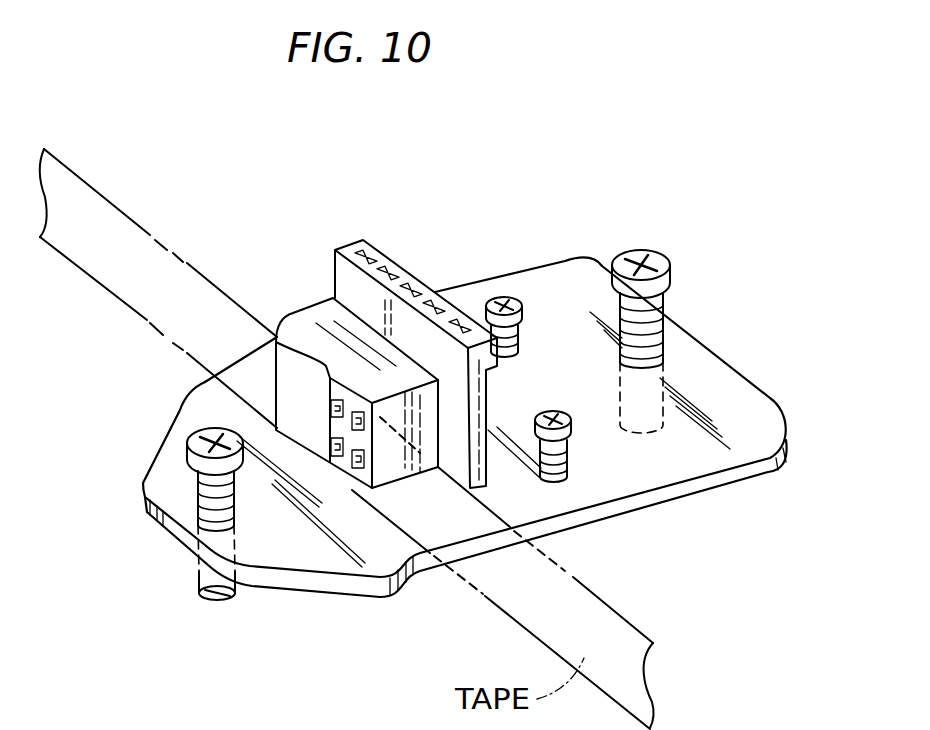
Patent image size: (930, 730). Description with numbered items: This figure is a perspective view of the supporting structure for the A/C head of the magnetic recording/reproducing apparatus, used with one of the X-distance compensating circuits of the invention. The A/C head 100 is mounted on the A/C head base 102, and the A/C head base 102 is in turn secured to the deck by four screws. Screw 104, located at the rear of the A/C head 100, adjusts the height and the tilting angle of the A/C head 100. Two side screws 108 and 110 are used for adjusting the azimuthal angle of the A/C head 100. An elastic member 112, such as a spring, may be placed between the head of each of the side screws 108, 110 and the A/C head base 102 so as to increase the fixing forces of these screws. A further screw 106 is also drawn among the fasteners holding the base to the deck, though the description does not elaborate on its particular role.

The A/C head 100 is at (311, 331).
The A/C head base 102 is at (733, 407).
The screw 104 is at (654, 252).
The screw 106 is at (190, 440).
The side screw 108 is at (572, 422).
The side screw 110 is at (493, 297).
The elastic member 112 is at (530, 330).